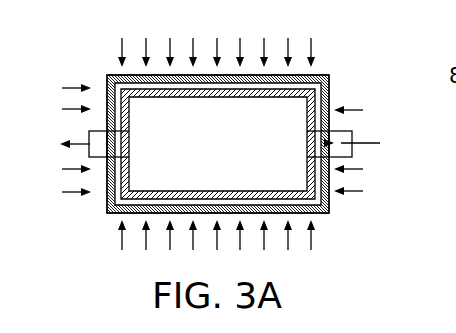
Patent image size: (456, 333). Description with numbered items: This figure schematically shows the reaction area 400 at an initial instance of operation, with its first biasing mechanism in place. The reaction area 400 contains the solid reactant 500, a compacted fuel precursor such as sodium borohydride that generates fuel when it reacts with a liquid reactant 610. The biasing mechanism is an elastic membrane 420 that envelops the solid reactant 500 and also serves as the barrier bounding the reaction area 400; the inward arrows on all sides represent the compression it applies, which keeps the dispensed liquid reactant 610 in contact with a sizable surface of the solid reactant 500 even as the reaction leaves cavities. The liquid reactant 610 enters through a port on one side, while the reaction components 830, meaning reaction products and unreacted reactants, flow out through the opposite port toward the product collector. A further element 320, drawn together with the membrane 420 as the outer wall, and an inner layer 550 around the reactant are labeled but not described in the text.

The outer wall / housing layer 320 is at (189, 111).
The elastic membrane 420 is at (110, 75).
The reaction area 400 is at (223, 121).
The inner wall / thermal barrier 550 is at (315, 100).
The solid reactant 500 is at (238, 154).
The reaction components 830 is at (80, 145).
The liquid reactant 610 is at (372, 143).